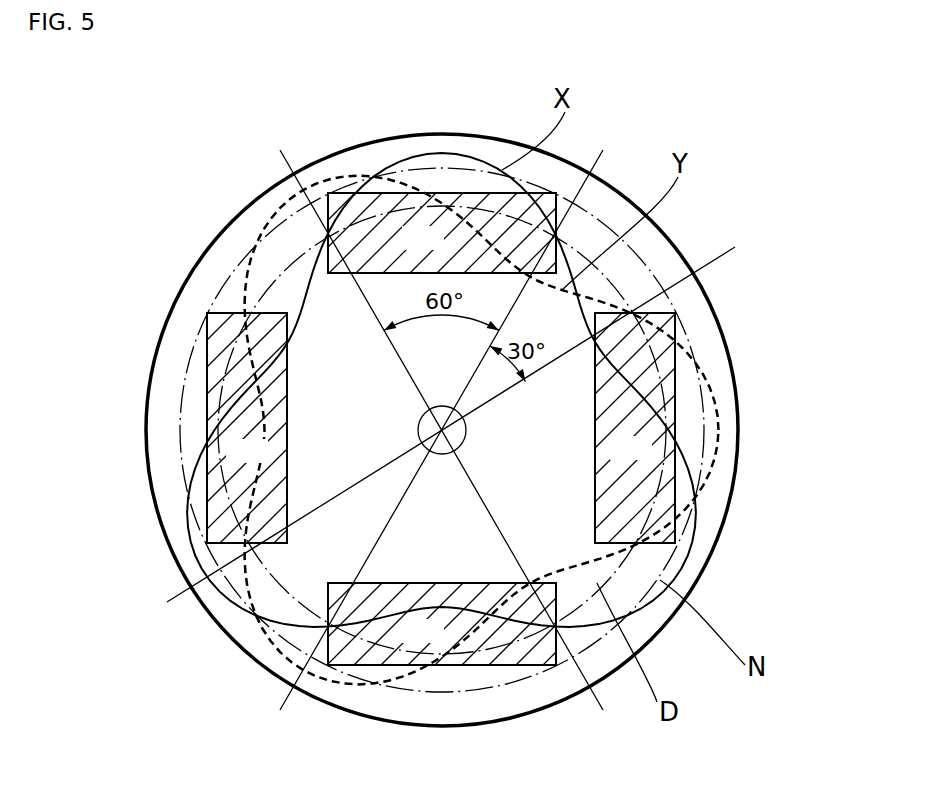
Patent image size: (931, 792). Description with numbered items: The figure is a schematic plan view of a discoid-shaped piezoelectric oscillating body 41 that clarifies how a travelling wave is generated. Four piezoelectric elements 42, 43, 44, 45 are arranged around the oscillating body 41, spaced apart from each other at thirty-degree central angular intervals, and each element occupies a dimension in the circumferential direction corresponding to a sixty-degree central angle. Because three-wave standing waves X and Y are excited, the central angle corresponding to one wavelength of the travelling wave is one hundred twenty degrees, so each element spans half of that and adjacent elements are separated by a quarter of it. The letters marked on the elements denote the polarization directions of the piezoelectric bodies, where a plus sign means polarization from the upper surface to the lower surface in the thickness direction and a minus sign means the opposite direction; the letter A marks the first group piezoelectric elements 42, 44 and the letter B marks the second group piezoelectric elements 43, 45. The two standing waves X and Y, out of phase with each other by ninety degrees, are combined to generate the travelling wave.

The discoid-shaped piezoelectric oscillating body 41 is at (224, 171).
The piezoelectric element 42 is at (468, 193).
The piezoelectric element 43 is at (676, 385).
The piezoelectric element 44 is at (492, 666).
The piezoelectric element 45 is at (207, 396).